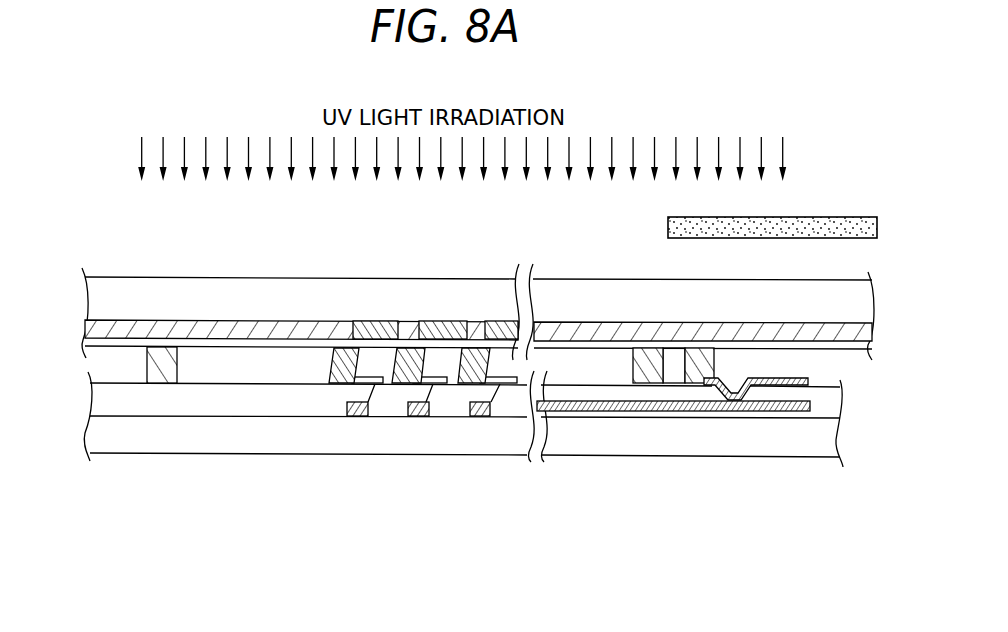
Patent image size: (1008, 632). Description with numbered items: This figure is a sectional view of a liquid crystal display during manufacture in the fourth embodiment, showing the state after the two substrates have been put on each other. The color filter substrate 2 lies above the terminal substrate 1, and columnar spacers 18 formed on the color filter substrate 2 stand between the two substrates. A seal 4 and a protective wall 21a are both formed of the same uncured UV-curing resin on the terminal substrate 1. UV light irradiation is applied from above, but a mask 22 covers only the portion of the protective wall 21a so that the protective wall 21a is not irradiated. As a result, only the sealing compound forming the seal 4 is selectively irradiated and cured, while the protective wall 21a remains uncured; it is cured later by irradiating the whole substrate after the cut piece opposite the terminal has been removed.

The terminal substrate 1 is at (75, 375).
The color filter substrate 2 is at (75, 272).
The seal 4 is at (165, 372).
The columnar spacers 18 is at (479, 352).
The protective wall 21a is at (700, 365).
The mask 22 is at (830, 228).